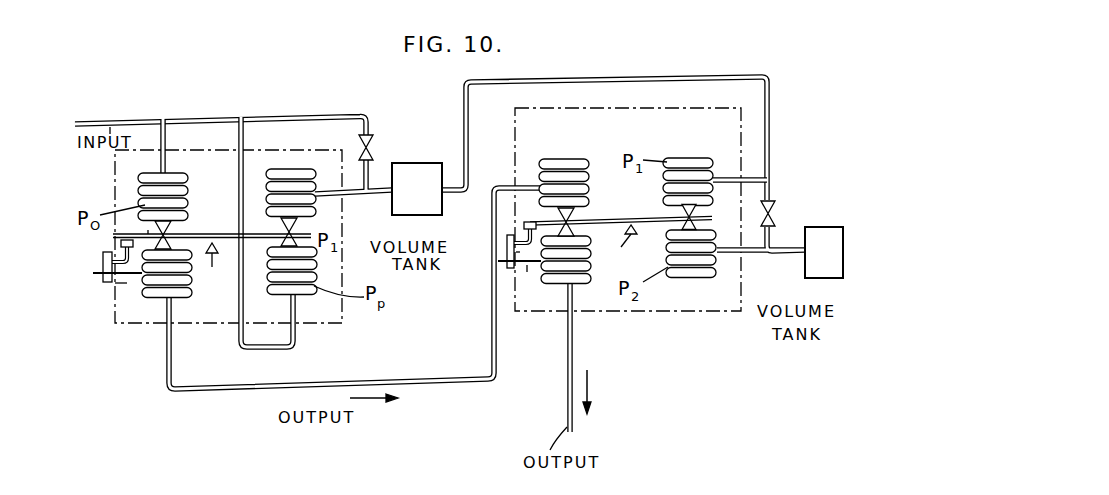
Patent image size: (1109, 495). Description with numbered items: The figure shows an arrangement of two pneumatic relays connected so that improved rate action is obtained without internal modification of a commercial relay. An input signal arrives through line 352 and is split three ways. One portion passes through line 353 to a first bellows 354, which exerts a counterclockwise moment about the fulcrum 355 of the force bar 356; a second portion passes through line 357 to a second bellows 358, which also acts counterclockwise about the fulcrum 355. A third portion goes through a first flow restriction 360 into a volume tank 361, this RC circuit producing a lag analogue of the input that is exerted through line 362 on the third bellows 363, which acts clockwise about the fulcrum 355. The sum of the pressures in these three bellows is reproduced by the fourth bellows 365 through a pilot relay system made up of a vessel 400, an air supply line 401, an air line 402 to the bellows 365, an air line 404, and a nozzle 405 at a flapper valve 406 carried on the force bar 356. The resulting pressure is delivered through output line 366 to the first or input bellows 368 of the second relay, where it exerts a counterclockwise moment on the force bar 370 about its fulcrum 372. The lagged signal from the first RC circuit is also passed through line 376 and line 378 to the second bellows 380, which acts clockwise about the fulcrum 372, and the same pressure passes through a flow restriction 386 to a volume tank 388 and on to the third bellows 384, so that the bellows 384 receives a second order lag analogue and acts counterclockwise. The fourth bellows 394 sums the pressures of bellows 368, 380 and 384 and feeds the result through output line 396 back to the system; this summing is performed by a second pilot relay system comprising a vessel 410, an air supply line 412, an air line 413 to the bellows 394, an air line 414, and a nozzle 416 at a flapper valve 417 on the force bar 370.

The input signal line 352 is at (148, 121).
The line 353 is at (168, 138).
The first bellows 354 is at (180, 190).
The fulcrum 355 is at (218, 267).
The force bar 356 is at (215, 218).
The line 357 is at (245, 139).
The second bellows 358 is at (312, 287).
The first flow restriction 360 is at (370, 137).
The volume tank 361 is at (413, 173).
The line 362 is at (363, 200).
The third bellows 363 is at (276, 182).
The fourth bellows 365 is at (157, 293).
The output line 366 is at (458, 383).
The first or input bellows 368 is at (563, 147).
The force bar 370 is at (613, 217).
The fulcrum 372 is at (621, 249).
The line 376 is at (620, 78).
The line 378 is at (755, 172).
The second bellows 380 is at (690, 157).
The third bellows 384 is at (700, 273).
The flow restriction 386 is at (775, 207).
The volume tank 388 is at (815, 255).
The fourth bellows 394 is at (562, 278).
The output line 396 is at (567, 343).
The vessel 400 is at (93, 267).
The air supply line 401 is at (101, 276).
The air line 402 is at (125, 283).
The air line 404 is at (113, 254).
The nozzle 405 is at (113, 239).
The flapper valve 406 is at (134, 232).
The vessel 410 is at (519, 277).
The air supply line 412 is at (500, 265).
The air line 413 is at (528, 275).
The air line 414 is at (528, 253).
The nozzle 416 is at (522, 233).
The flapper valve 417 is at (530, 221).